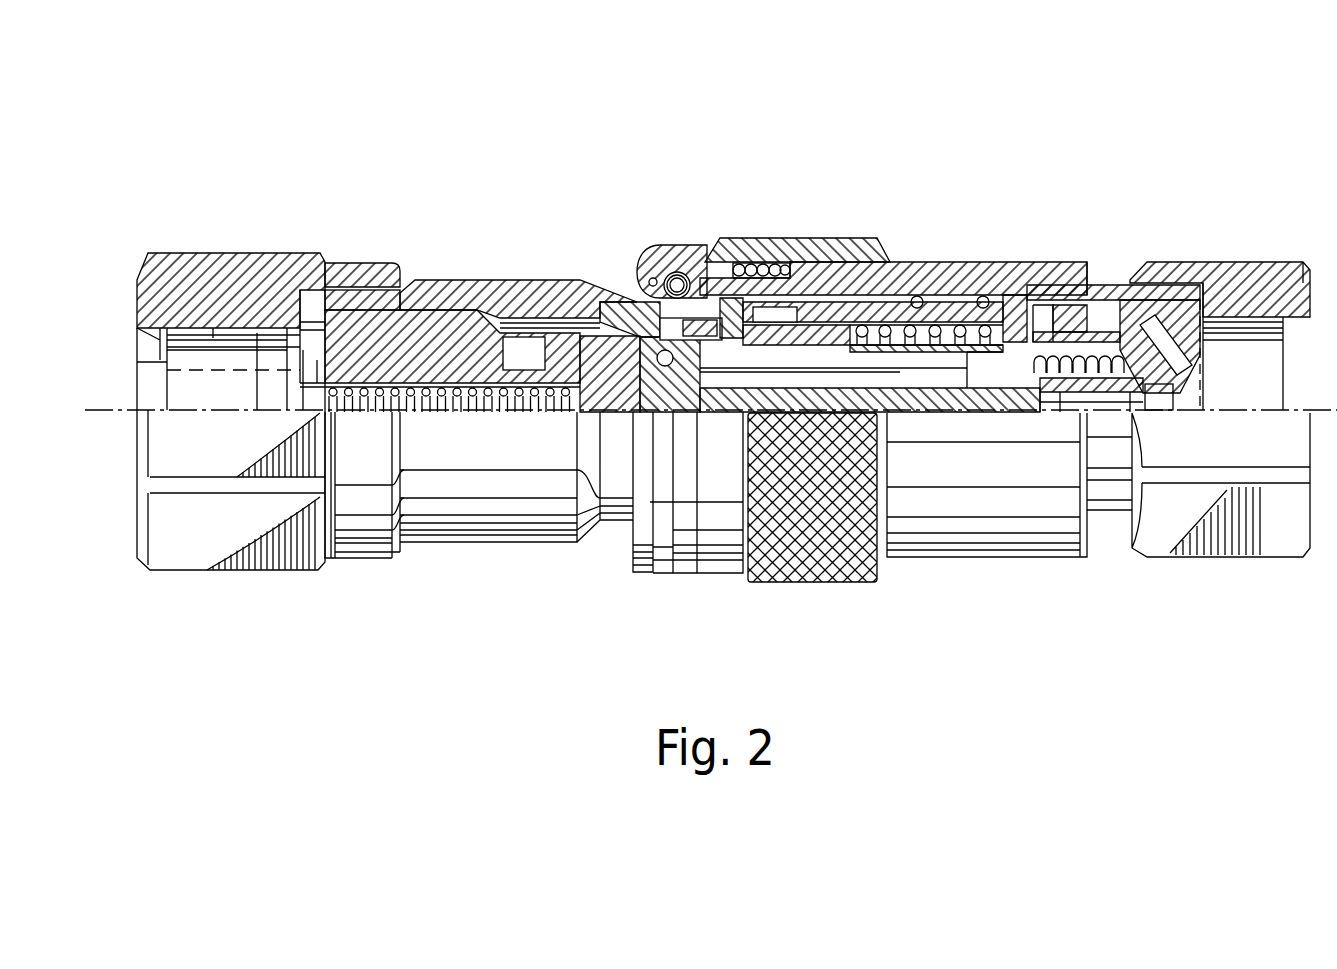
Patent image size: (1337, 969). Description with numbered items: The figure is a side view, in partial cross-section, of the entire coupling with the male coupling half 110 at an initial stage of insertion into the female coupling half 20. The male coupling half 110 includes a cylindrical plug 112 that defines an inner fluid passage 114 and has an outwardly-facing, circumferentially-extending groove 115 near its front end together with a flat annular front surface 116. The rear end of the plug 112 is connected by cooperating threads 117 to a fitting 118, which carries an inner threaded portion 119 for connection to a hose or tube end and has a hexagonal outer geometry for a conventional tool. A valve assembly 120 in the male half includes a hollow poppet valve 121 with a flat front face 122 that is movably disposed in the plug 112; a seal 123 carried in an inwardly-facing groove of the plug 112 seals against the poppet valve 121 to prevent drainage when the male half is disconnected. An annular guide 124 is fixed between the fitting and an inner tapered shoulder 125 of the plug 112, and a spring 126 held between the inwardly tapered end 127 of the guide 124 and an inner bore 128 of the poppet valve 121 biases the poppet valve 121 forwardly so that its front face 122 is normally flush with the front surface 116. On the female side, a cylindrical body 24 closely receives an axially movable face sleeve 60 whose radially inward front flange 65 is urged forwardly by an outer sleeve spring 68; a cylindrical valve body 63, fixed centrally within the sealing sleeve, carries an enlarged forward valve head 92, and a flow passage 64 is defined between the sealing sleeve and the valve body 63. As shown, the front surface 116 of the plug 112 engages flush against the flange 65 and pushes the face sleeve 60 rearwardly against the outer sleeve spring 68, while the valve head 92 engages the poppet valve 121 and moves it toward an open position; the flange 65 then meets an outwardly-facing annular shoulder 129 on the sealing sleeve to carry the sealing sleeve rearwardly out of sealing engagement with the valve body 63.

The male coupling half 110 is at (414, 114).
The fitting 118 is at (212, 255).
The inner threaded portion 119 is at (212, 330).
The cooperating threads 117 is at (345, 262).
The inner tapered shoulder 125 is at (420, 262).
The annular guide 124 is at (366, 262).
The cylindrical plug 112 is at (480, 262).
The inner fluid passage 114 is at (528, 335).
The flat front face 122 is at (578, 352).
The channel or groove 115 is at (616, 262).
The seal 123 is at (697, 262).
The annular flange 65 is at (730, 256).
The flat annular front surface 116 is at (780, 255).
The face sleeve 60 is at (880, 260).
The cylindrical body 24 is at (923, 260).
The outer sleeve spring 68 is at (997, 258).
The female coupling half 20 is at (1109, 225).
The inwardly tapered end 127 is at (307, 453).
The spring 126 is at (372, 415).
The valve assembly 120 is at (464, 424).
The poppet valve 121 is at (577, 420).
The inner bore 128 is at (607, 400).
The valve head 92 is at (672, 440).
The annular shoulder 129 is at (790, 465).
The valve body 63 is at (883, 420).
The flow passage 64 is at (960, 372).